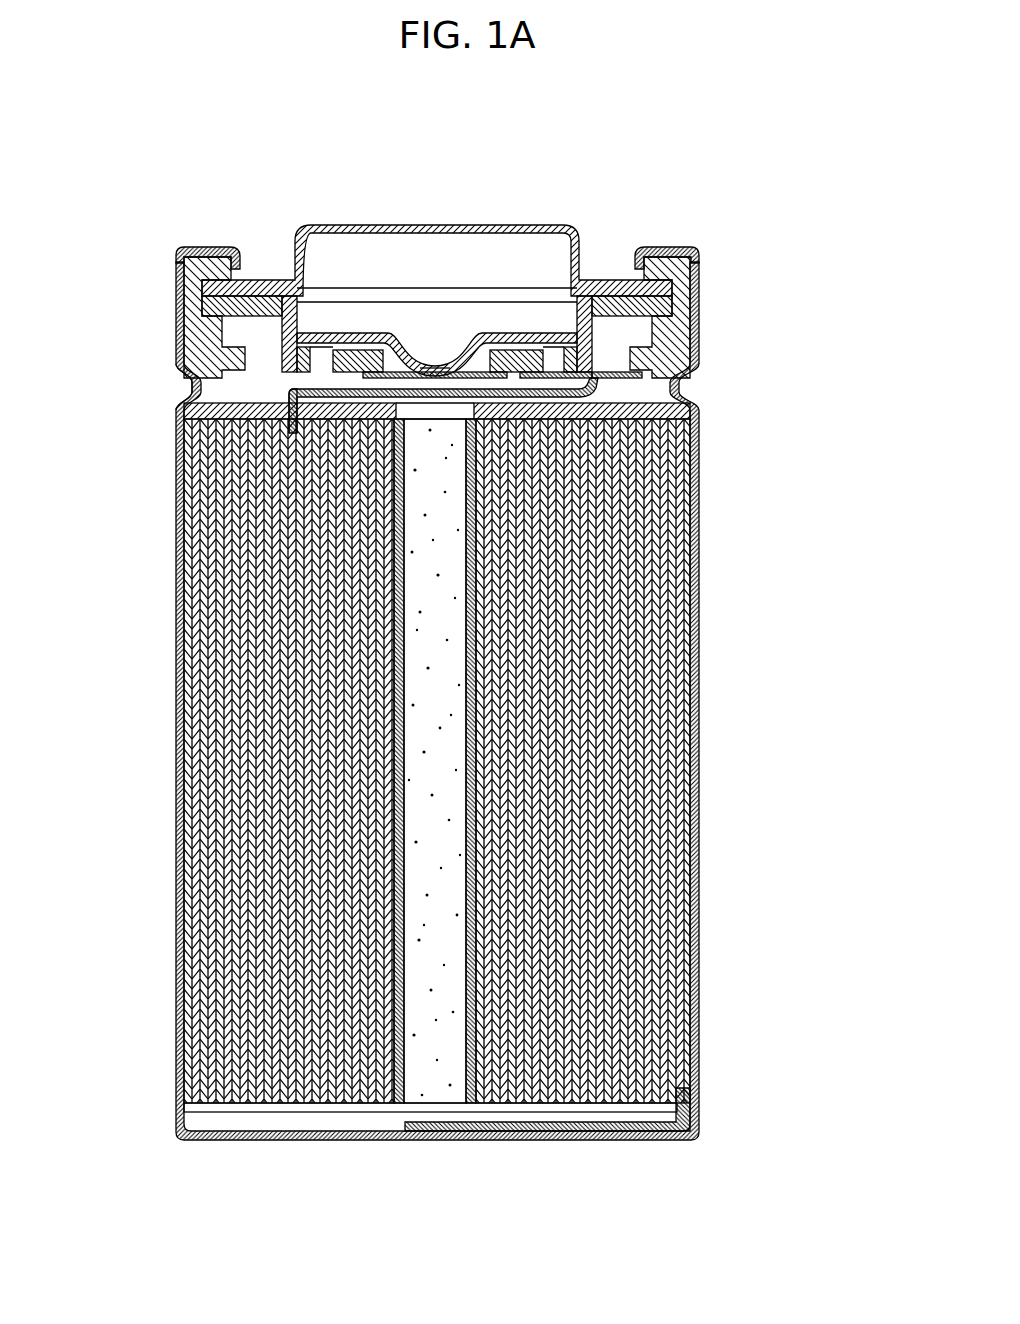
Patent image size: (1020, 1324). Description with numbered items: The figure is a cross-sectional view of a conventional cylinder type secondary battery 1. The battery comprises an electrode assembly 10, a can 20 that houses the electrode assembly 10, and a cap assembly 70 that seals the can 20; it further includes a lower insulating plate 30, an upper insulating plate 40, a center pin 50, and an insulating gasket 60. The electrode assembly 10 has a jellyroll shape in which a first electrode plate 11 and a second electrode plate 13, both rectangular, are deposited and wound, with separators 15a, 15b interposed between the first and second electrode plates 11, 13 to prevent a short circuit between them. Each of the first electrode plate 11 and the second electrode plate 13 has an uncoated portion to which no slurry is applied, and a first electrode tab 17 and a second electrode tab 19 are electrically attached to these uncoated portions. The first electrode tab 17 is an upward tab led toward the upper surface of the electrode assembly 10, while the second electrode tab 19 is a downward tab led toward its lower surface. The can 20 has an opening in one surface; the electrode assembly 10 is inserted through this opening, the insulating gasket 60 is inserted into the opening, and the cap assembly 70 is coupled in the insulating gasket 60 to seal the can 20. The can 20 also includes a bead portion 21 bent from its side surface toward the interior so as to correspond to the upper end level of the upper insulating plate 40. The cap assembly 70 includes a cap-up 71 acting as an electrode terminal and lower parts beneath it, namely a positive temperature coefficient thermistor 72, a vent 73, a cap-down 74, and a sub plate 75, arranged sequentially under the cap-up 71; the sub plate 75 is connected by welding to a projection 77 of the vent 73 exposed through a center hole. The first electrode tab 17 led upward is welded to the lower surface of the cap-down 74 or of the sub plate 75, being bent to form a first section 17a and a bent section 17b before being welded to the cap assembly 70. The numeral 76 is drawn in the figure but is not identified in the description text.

The cylinder type secondary battery 1 is at (156, 129).
The electrode assembly 10 is at (762, 385).
The first electrode plate 11 is at (652, 565).
The second electrode plate 13 is at (668, 490).
The separator 15a is at (660, 527).
The separator 15b is at (640, 605).
The first electrode tab 17 is at (594, 398).
The first section 17a is at (290, 396).
The bent section 17b is at (634, 373).
The second electrode tab 19 is at (614, 1140).
The can 20 is at (182, 512).
The bead portion 21 is at (196, 380).
The lower insulating plate 30 is at (312, 1112).
The upper insulating plate 40 is at (216, 410).
The center pin 50 is at (422, 590).
The insulating gasket 60 is at (686, 300).
The cap assembly 70 is at (598, 158).
The cap-up 71 is at (504, 228).
The positive temperature coefficient thermistor 72 is at (604, 292).
The vent 73 is at (311, 322).
The cap-down 74 is at (366, 352).
The sub plate 75 is at (560, 352).
The gasket 76 is at (262, 290).
The projection 77 is at (440, 362).